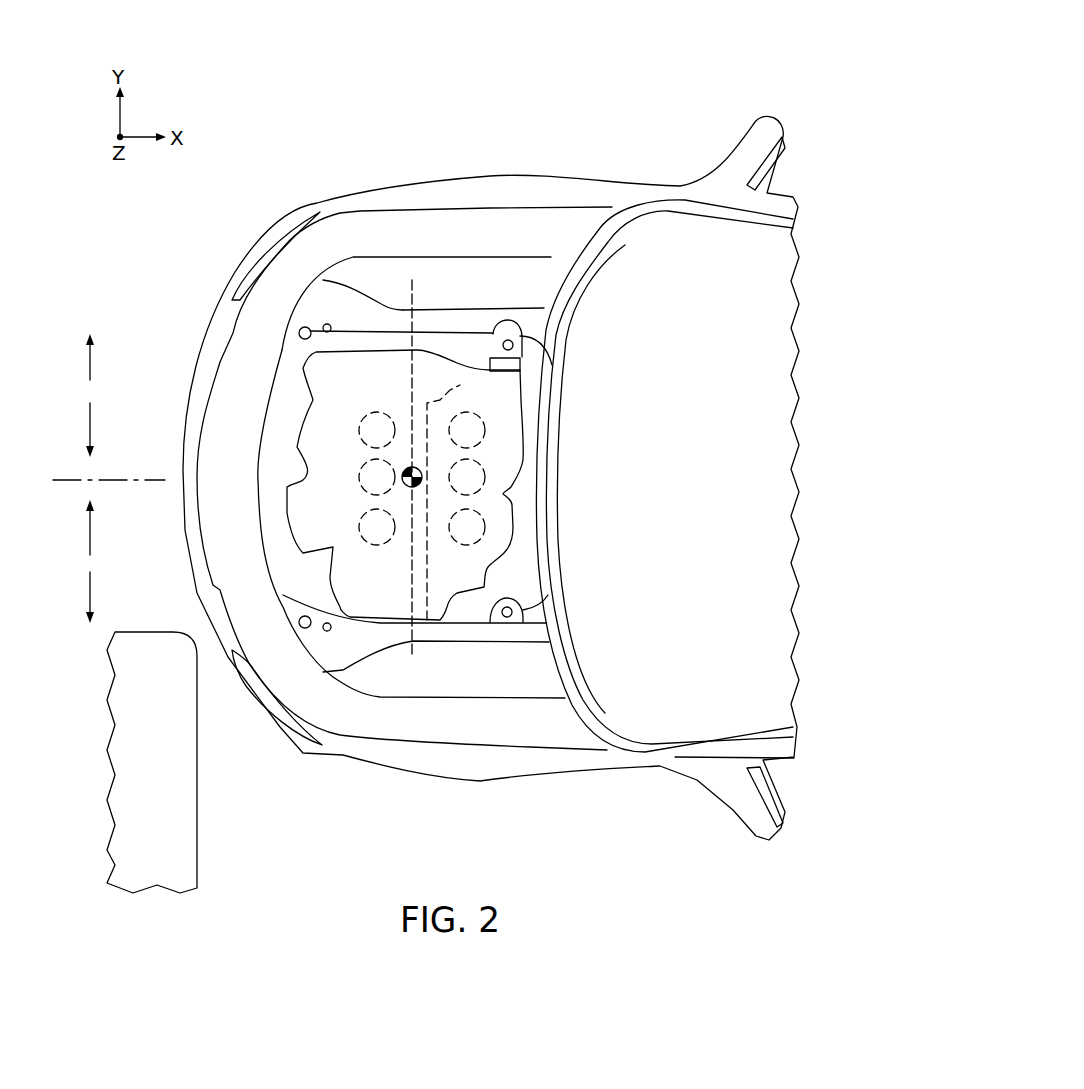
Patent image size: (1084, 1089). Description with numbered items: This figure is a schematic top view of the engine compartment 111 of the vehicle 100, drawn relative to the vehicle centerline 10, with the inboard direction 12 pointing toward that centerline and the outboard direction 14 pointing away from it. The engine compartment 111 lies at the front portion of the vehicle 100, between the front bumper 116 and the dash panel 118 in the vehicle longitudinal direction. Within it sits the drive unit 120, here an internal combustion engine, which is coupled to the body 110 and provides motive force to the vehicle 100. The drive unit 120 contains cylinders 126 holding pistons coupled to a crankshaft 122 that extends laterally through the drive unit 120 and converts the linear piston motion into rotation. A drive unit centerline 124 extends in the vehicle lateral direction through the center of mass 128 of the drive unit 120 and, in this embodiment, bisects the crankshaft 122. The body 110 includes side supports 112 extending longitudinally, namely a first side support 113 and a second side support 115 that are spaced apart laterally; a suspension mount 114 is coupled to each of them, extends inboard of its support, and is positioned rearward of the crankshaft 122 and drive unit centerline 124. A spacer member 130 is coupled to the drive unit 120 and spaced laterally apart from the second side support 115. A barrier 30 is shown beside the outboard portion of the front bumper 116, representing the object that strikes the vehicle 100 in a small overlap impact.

The vehicle centerline 10 is at (62, 478).
The inboard direction 12 is at (90, 422).
The outboard direction 14 is at (90, 364).
The barrier 30 is at (194, 834).
The vehicle 100 is at (638, 142).
The body 110 is at (686, 163).
The engine compartment 111 is at (431, 268).
The side supports 112 is at (432, 643).
The first side support 113 is at (463, 645).
The suspension mount 114 is at (543, 347).
The second side support 115 is at (497, 320).
The front bumper 116 is at (215, 310).
The dash panel 118 is at (548, 467).
The drive unit 120 is at (318, 378).
The crankshaft 122 is at (461, 495).
The drive unit centerline 124 is at (412, 294).
The cylinders 126 is at (377, 411).
The center of mass 128 is at (403, 475).
The spacer member 130 is at (488, 353).